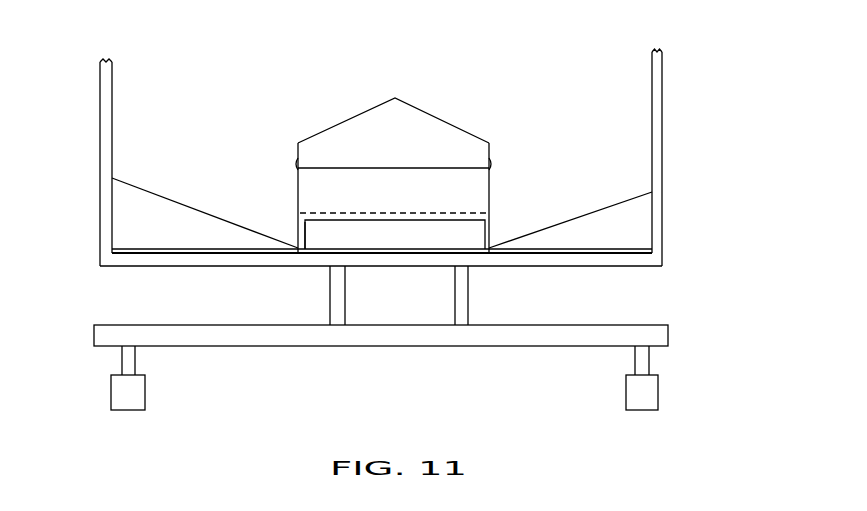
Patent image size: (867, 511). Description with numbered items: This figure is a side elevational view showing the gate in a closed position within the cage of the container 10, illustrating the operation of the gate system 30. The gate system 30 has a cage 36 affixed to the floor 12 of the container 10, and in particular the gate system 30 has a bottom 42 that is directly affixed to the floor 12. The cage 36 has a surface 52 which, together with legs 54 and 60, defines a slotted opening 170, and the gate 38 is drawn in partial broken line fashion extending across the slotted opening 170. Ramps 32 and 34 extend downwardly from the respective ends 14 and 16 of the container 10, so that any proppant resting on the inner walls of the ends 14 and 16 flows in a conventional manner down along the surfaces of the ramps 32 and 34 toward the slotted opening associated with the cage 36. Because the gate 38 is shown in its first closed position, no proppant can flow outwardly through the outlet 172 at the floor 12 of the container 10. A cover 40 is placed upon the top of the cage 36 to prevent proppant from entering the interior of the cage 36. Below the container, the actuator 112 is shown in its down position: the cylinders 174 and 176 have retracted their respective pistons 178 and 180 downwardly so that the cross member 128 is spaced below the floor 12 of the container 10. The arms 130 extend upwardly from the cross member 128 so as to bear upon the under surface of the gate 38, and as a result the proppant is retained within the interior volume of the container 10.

The container 10 is at (694, 219).
The floor 12 is at (636, 266).
The end 14 is at (663, 143).
The end 16 is at (100, 158).
The gate system 30 is at (543, 126).
The ramp 32 is at (178, 203).
The ramp 34 is at (578, 217).
The cage 36 is at (492, 178).
The gate 38 is at (357, 212).
The cover 40 is at (436, 121).
The bottom 42 is at (543, 253).
The surface 52 is at (305, 186).
The leg 54 is at (303, 242).
The leg 60 is at (490, 232).
The actuator 112 is at (76, 375).
The cross member 128 is at (516, 338).
The arms 130 is at (300, 305).
The slotted opening 170 is at (484, 268).
The outlet 172 is at (399, 270).
The cylinder 174 is at (136, 392).
The cylinder 176 is at (654, 392).
The piston 178 is at (130, 361).
The piston 180 is at (644, 360).